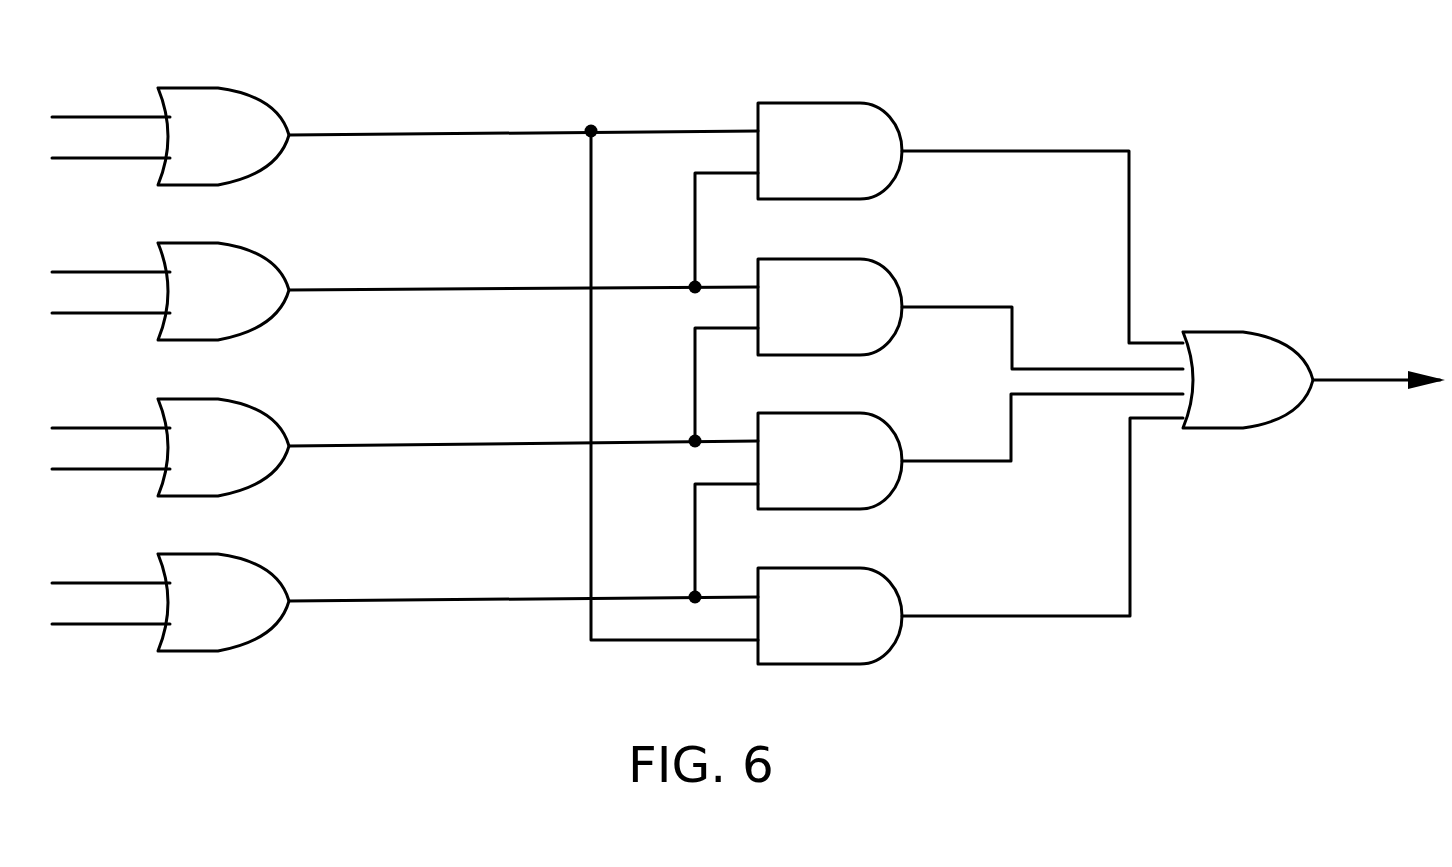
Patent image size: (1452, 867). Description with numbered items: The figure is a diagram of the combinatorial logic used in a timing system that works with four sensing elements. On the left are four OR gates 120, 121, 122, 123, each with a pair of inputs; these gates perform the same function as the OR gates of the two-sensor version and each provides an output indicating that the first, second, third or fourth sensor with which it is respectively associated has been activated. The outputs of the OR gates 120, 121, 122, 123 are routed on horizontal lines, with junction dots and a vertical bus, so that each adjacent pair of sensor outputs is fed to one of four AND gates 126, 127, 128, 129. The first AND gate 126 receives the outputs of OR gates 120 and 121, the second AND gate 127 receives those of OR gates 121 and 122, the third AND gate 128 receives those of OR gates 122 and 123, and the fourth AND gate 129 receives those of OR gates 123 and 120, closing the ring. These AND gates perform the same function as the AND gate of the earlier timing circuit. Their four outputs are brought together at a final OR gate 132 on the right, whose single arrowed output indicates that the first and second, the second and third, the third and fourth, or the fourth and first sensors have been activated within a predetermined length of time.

The OR gate 120 is at (240, 115).
The OR gate 121 is at (240, 268).
The OR gate 122 is at (240, 424).
The OR gate 123 is at (240, 580).
The AND gate 126 is at (873, 140).
The AND gate 127 is at (873, 297).
The AND gate 128 is at (873, 450).
The AND gate 129 is at (873, 607).
The OR gate 132 is at (1260, 360).